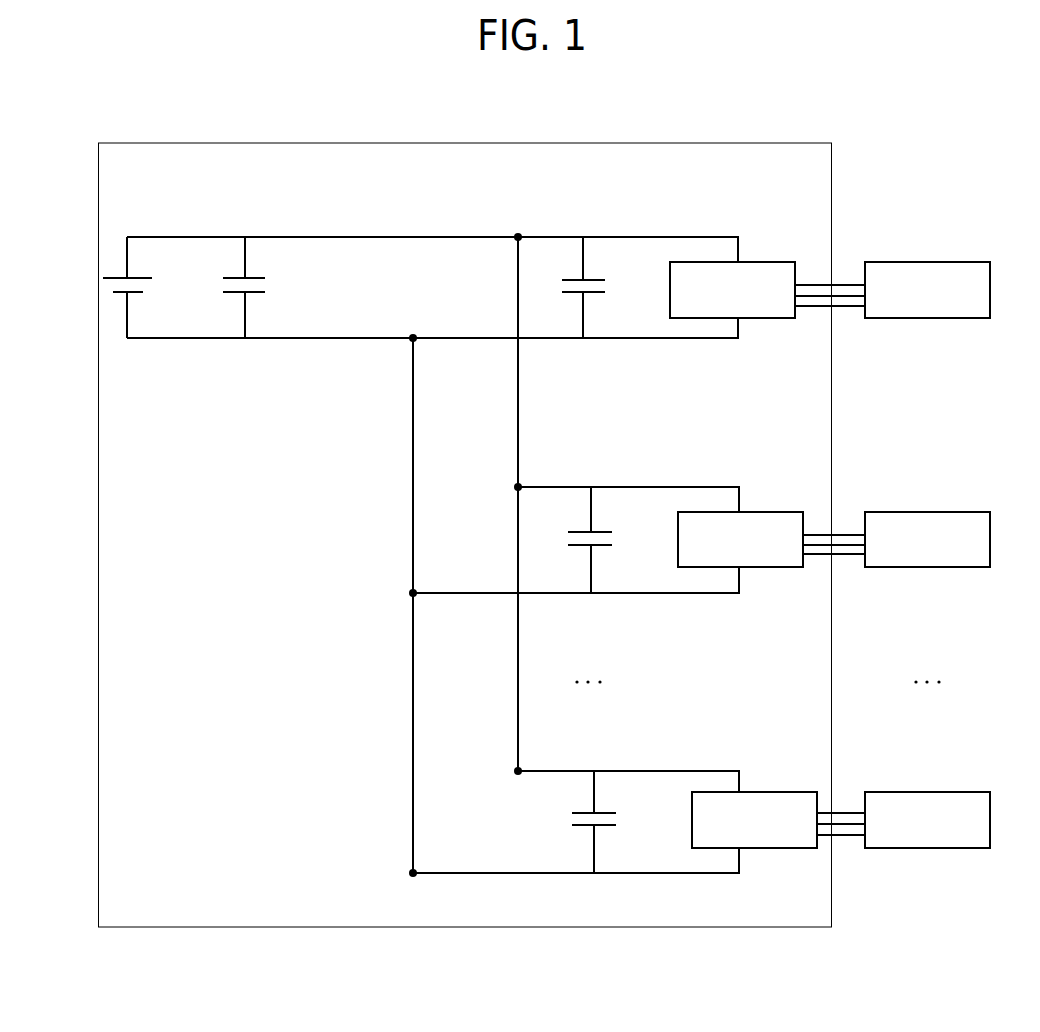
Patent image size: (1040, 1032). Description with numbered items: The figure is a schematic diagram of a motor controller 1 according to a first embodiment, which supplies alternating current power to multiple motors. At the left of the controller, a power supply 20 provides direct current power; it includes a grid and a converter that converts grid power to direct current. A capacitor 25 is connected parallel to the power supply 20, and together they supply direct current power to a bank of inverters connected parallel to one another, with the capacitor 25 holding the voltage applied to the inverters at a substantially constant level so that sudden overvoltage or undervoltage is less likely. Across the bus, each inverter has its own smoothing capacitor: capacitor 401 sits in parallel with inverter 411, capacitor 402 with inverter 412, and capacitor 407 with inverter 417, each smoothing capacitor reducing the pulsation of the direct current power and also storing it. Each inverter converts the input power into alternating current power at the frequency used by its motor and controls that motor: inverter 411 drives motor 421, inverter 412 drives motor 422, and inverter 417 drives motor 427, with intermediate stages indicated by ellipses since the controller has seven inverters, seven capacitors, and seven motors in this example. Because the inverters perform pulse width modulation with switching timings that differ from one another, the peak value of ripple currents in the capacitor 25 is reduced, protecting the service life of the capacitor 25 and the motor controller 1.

The motor controller 1 is at (783, 142).
The power supply 20 is at (146, 277).
The capacitor 25 is at (254, 277).
The capacitor 401 is at (596, 279).
The inverter 411 is at (749, 262).
The motor 421 is at (956, 262).
The capacitor 402 is at (604, 531).
The inverter 412 is at (753, 512).
The motor 422 is at (951, 512).
The capacitor 407 is at (604, 812).
The inverter 417 is at (753, 792).
The motor 427 is at (950, 792).